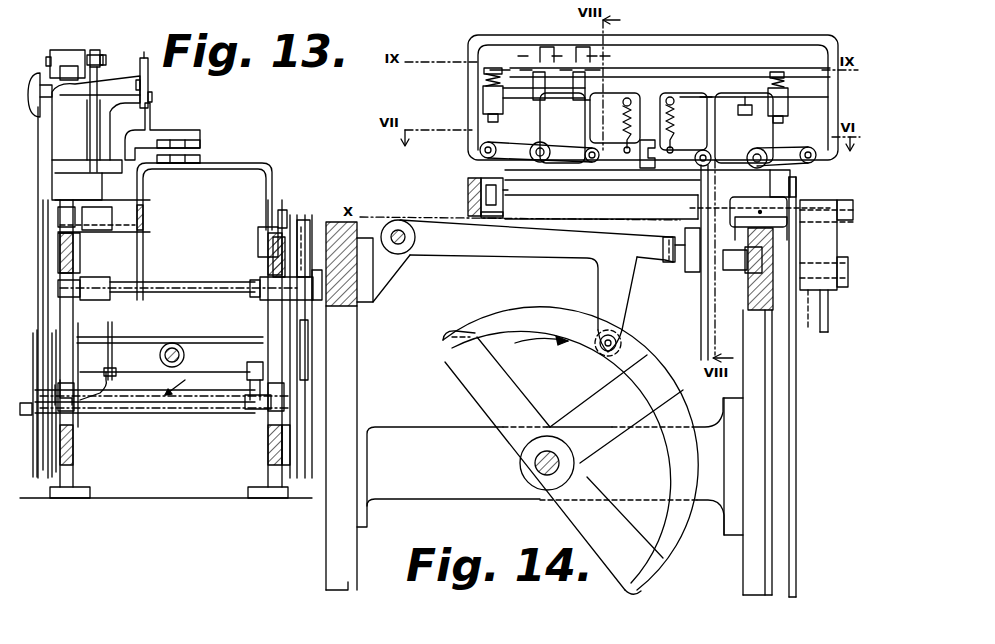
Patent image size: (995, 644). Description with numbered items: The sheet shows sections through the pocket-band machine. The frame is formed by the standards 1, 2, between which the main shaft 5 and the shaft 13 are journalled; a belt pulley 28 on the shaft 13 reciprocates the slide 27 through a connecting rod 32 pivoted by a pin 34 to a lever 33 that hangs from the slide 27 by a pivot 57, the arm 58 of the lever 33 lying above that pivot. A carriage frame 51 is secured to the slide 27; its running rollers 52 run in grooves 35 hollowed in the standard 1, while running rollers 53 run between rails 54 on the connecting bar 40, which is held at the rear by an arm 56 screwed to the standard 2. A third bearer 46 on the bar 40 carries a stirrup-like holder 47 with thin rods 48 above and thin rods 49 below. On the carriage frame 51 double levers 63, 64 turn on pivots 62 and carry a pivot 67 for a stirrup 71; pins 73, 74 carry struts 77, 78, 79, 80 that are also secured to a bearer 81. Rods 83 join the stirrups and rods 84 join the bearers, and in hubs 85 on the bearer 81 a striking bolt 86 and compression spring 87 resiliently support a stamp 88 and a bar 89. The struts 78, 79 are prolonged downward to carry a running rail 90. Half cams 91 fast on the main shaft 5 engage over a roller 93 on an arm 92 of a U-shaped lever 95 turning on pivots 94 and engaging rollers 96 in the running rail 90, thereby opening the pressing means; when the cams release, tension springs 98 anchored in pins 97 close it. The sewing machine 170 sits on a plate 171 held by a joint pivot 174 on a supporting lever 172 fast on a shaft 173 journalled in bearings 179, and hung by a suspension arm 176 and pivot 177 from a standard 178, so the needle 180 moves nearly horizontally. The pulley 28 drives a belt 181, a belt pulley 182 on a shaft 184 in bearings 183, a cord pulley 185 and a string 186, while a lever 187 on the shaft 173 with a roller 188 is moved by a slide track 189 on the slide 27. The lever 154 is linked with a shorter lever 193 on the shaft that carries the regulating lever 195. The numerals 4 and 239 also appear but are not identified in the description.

In FIG. 13, the standard 1 is at (272, 479).
In FIG. 14, the standard 1 is at (760, 392).
In FIG. 13, the standard 2 is at (68, 476).
In FIG. 14, the standard 2 is at (345, 333).
In FIG. 13, the base rail 4 is at (208, 370).
In FIG. 14, the base rail 4 is at (396, 430).
In FIG. 13, the main shaft 5 is at (184, 355).
In FIG. 14, the main shaft 5 is at (535, 463).
In FIG. 13, the shaft 13 is at (298, 384).
In FIG. 14, the slide 27 is at (740, 203).
In FIG. 13, the belt pulley 28 is at (300, 333).
In FIG. 14, the connecting rod 32 is at (830, 333).
In FIG. 14, the lever 33 is at (785, 262).
In FIG. 14, the pin 34 is at (814, 325).
In FIG. 14, the grooves 35 is at (790, 255).
In FIG. 13, the connecting bar 40 is at (135, 210).
In FIG. 14, the connecting bar 40 is at (470, 180).
In FIG. 13, the third bearer 46 is at (272, 166).
In FIG. 13, the stirrup-like holder 47 is at (200, 136).
In FIG. 13, the thin rods 48 is at (175, 140).
In FIG. 14, the thin rods 48 is at (530, 56).
In FIG. 13, the thin rods 49 is at (175, 163).
In FIG. 14, the thin rods 49 is at (604, 70).
In FIG. 14, the carriage frame 51 is at (614, 192).
In FIG. 14, the running rollers 52 is at (735, 262).
In FIG. 14, the running rollers 53 is at (486, 196).
In FIG. 14, the rails 54 is at (481, 215).
In FIG. 13, the arm 56 is at (44, 235).
In FIG. 14, the pivot 57 is at (846, 288).
In FIG. 14, the arm 58 is at (798, 186).
In FIG. 14, the pivots 62 is at (540, 162).
In FIG. 14, the double lever 63 is at (788, 147).
In FIG. 14, the double lever 64 is at (508, 146).
In FIG. 14, the pivot 67 is at (480, 152).
In FIG. 14, the stirrup 71 is at (480, 37).
In FIG. 14, the pin 73 is at (703, 150).
In FIG. 14, the pin 74 is at (580, 172).
In FIG. 14, the strut 77 is at (588, 98).
In FIG. 14, the strut 78 is at (700, 100).
In FIG. 14, the strut 79 is at (704, 99).
In FIG. 14, the strut 80 is at (586, 108).
In FIG. 14, the bearer 81 is at (790, 100).
In FIG. 14, the rods 83 is at (583, 47).
In FIG. 14, the rods 84 is at (578, 100).
In FIG. 14, the hubs 85 is at (483, 102).
In FIG. 14, the striking bolt 86 is at (488, 120).
In FIG. 14, the compression spring 87 is at (482, 78).
In FIG. 14, the stamp 88 is at (492, 68).
In FIG. 14, the bar 89 is at (706, 68).
In FIG. 14, the running rail 90 is at (690, 272).
In FIG. 14, the half cams 91 is at (495, 325).
In FIG. 14, the arms 92 is at (608, 284).
In FIG. 14, the roller 93 is at (603, 352).
In FIG. 14, the pivots 94 is at (402, 245).
In FIG. 14, the U-shaped lever 95 is at (526, 235).
In FIG. 14, the rollers 96 is at (668, 264).
In FIG. 14, the pins 97 is at (623, 104).
In FIG. 14, the tension springs 98 is at (622, 124).
In FIG. 13, the lever 154 is at (112, 337).
In FIG. 13, the sewing machine 170 is at (108, 95).
In FIG. 13, the plate 171 is at (65, 160).
In FIG. 13, the supporting lever 172 is at (105, 248).
In FIG. 13, the shaft 173 is at (195, 282).
In FIG. 13, the joint pivot 174 is at (80, 205).
In FIG. 13, the suspension arm 176 is at (96, 52).
In FIG. 13, the pivot 177 is at (106, 60).
In FIG. 13, the standard 178 is at (64, 57).
In FIG. 13, the bearings 179 is at (95, 278).
In FIG. 13, the needle 180 is at (148, 62).
In FIG. 13, the belt 181 is at (252, 410).
In FIG. 13, the belt pulley 182 is at (282, 445).
In FIG. 13, the bearings 183 is at (72, 405).
In FIG. 13, the shaft 184 is at (152, 414).
In FIG. 13, the cord pulley 185 is at (30, 470).
In FIG. 13, the string 186 is at (55, 285).
In FIG. 13, the lever 187 is at (308, 222).
In FIG. 13, the roller 188 is at (268, 228).
In FIG. 13, the slide track 189 is at (283, 210).
In FIG. 13, the shorter lever 193 is at (110, 340).
In FIG. 13, the regulating lever 195 is at (272, 385).
In FIG. 14, the column part 239 is at (755, 262).